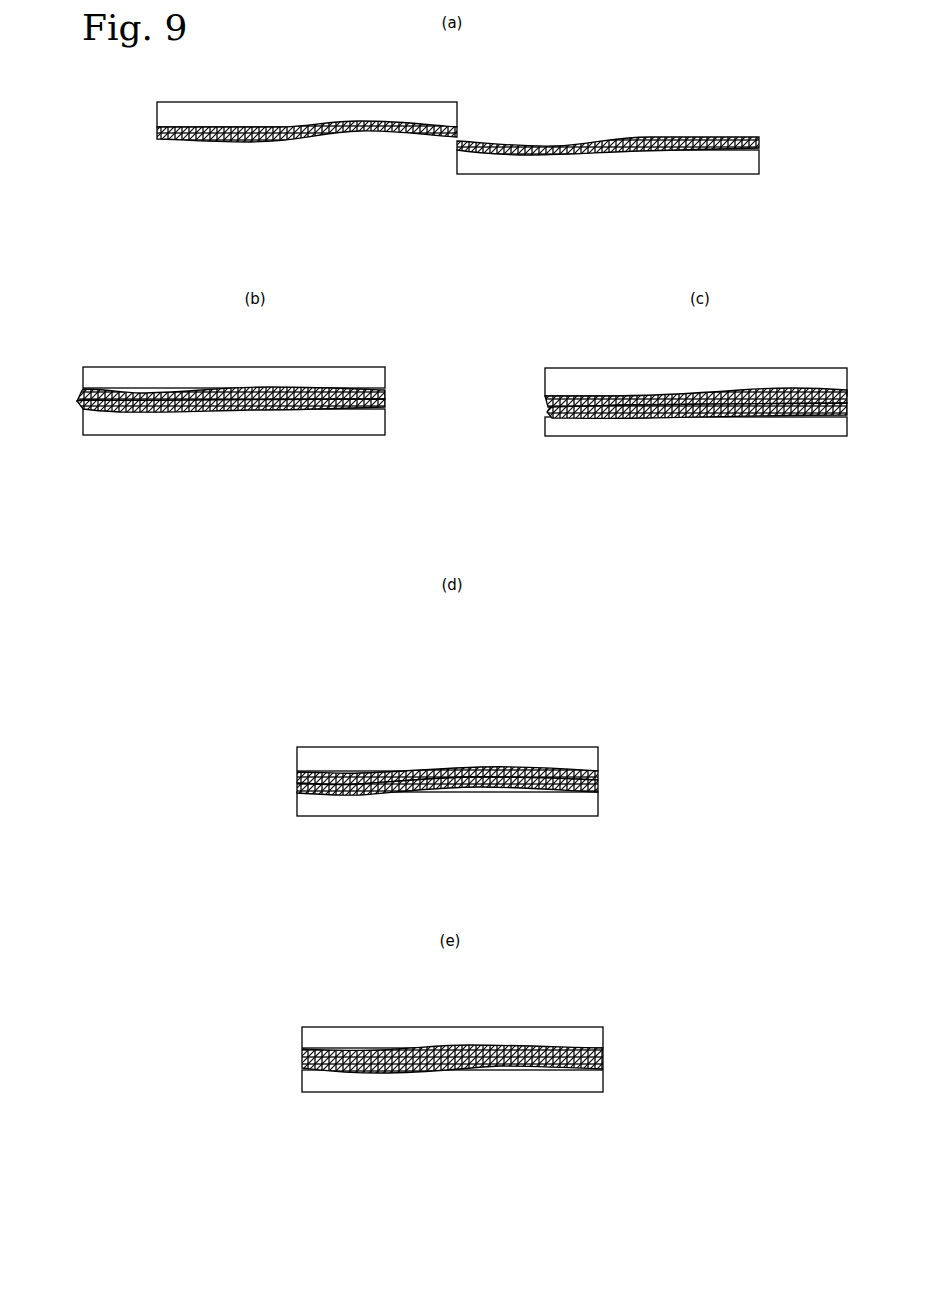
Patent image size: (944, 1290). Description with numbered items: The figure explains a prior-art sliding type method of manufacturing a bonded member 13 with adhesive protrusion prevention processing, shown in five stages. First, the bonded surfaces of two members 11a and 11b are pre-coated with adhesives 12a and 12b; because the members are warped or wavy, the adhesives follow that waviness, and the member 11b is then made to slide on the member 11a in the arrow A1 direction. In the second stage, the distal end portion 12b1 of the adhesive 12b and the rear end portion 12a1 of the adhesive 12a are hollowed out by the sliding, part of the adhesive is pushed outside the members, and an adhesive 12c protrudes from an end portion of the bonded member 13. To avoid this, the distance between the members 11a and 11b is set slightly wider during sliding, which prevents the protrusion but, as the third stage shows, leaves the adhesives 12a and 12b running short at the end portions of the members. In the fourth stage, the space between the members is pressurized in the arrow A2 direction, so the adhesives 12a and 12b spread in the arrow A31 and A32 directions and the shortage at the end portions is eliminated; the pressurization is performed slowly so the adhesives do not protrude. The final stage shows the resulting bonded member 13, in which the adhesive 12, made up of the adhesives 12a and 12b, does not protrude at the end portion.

The member 11a is at (320, 102).
The member 11b is at (607, 175).
The adhesive 12a is at (348, 130).
The adhesive 12b is at (590, 140).
The adhesive 12 is at (338, 1063).
The bonded member 13 is at (486, 90).
The arrow direction A1 is at (572, 127).
The adhesive 12c is at (83, 398).
The distal end portion 12b1 is at (85, 403).
The rear end portion 12a1 is at (385, 398).
The arrow direction A2 is at (448, 729).
The arrow direction A31 is at (380, 784).
The arrow direction A32 is at (547, 779).